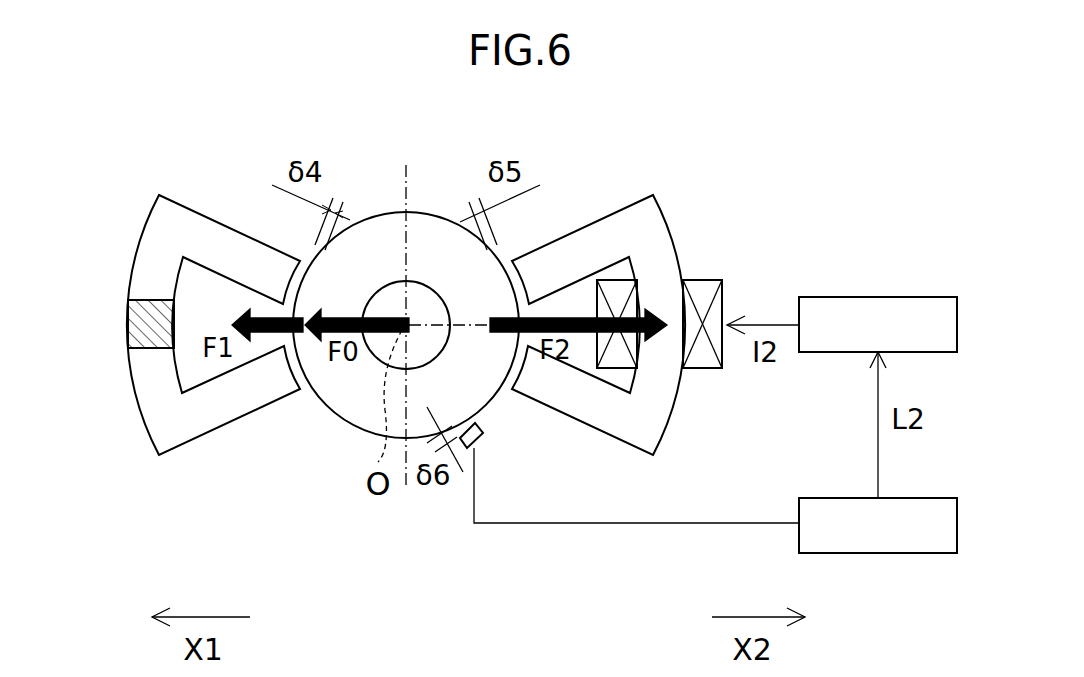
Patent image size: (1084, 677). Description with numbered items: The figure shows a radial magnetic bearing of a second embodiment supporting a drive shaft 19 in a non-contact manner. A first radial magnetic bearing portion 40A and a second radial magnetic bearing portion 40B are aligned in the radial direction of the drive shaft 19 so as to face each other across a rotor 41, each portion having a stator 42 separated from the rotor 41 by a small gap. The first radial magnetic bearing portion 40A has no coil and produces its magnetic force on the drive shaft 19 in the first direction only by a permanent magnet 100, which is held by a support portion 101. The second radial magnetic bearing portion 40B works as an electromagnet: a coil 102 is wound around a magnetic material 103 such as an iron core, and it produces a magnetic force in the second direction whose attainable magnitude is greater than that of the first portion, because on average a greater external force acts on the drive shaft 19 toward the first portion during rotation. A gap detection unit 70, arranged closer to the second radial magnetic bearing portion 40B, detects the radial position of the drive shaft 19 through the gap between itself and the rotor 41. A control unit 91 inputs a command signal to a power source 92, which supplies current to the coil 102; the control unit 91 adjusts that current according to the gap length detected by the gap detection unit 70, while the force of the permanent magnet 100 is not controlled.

The drive shaft 19 is at (378, 338).
The first radial magnetic bearing portion 40A is at (168, 325).
The second radial magnetic bearing portion 40B is at (632, 283).
The rotor 41 is at (482, 383).
The stator 42 is at (394, 325).
The gap detection unit 70 is at (483, 430).
The control unit 91 is at (915, 555).
The power source 92 is at (920, 297).
The permanent magnet 100 is at (130, 320).
The support portion 101 is at (190, 428).
The coil 102 is at (703, 280).
The magnetic material 103 is at (652, 243).